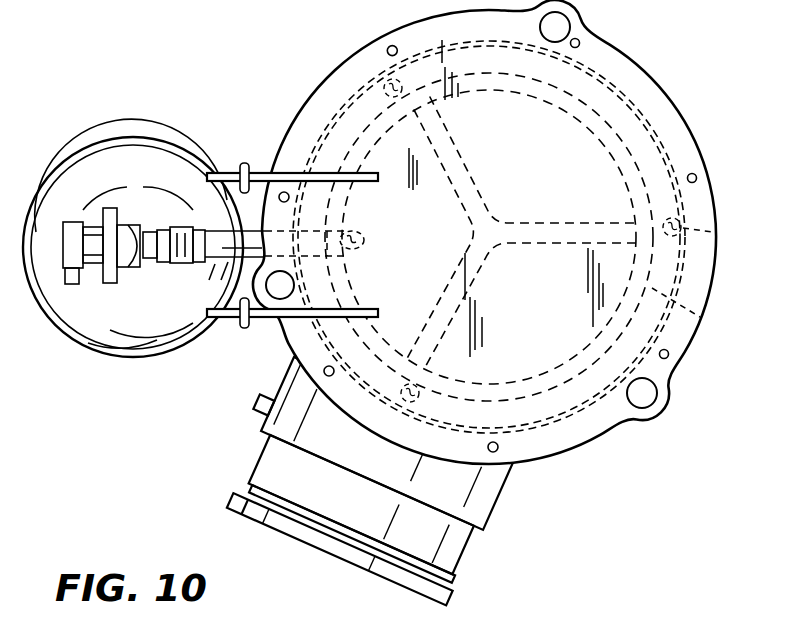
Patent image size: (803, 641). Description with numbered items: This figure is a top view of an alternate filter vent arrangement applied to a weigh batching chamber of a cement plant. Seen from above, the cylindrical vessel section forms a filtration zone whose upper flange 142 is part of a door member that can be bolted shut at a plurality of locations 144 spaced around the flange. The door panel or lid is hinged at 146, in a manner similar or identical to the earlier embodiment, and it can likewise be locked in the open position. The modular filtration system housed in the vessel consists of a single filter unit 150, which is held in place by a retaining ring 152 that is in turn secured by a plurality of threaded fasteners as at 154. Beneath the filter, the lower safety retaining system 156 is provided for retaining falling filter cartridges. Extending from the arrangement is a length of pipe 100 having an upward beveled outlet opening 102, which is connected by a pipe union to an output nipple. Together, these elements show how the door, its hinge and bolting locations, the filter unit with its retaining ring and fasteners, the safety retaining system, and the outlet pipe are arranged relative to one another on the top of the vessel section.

The length of pipe 100 is at (205, 168).
The upward beveled outlet opening 102 is at (362, 233).
The upper flange 142 is at (647, 93).
The bolting locations 144 is at (580, 40).
The hinge 146 is at (244, 162).
The filter unit 150 is at (545, 310).
The retaining ring 152 is at (700, 317).
The threaded fasteners 154 is at (712, 232).
The lower safety retaining system 156 is at (448, 141).